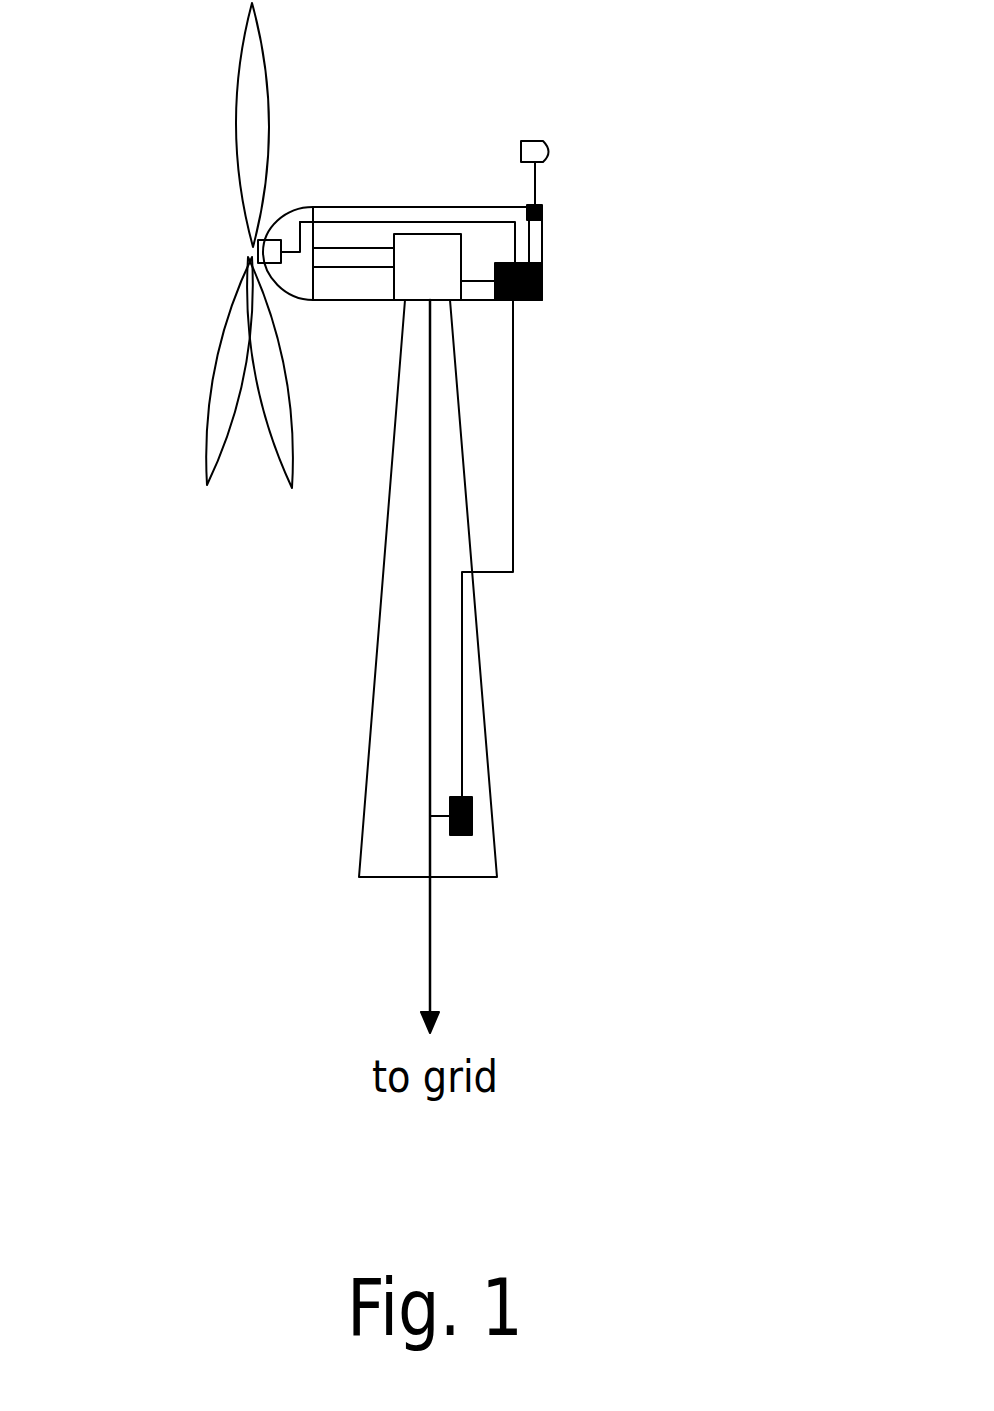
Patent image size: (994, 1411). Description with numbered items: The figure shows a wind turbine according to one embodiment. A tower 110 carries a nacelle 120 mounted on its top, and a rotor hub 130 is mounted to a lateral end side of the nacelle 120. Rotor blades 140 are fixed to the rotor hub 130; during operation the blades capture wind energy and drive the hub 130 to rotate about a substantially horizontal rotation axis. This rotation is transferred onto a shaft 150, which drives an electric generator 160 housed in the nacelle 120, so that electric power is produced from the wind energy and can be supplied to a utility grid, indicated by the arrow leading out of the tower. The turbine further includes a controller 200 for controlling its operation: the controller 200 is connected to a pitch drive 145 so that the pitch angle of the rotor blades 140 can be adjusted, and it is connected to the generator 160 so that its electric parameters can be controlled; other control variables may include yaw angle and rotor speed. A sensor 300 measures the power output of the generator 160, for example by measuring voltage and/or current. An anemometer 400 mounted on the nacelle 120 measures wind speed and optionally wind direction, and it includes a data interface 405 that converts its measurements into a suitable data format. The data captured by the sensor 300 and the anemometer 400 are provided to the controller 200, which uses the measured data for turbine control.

The tower 110 is at (487, 707).
The nacelle 120 is at (545, 253).
The rotor hub 130 is at (290, 296).
The rotor blades 140 is at (235, 133).
The pitch drive 145 is at (250, 250).
The shaft 150 is at (347, 247).
The electric generator 160 is at (417, 233).
The controller 200 is at (545, 287).
The sensor 300 is at (472, 813).
The anemometer 400 is at (548, 142).
The data interface 405 is at (545, 210).